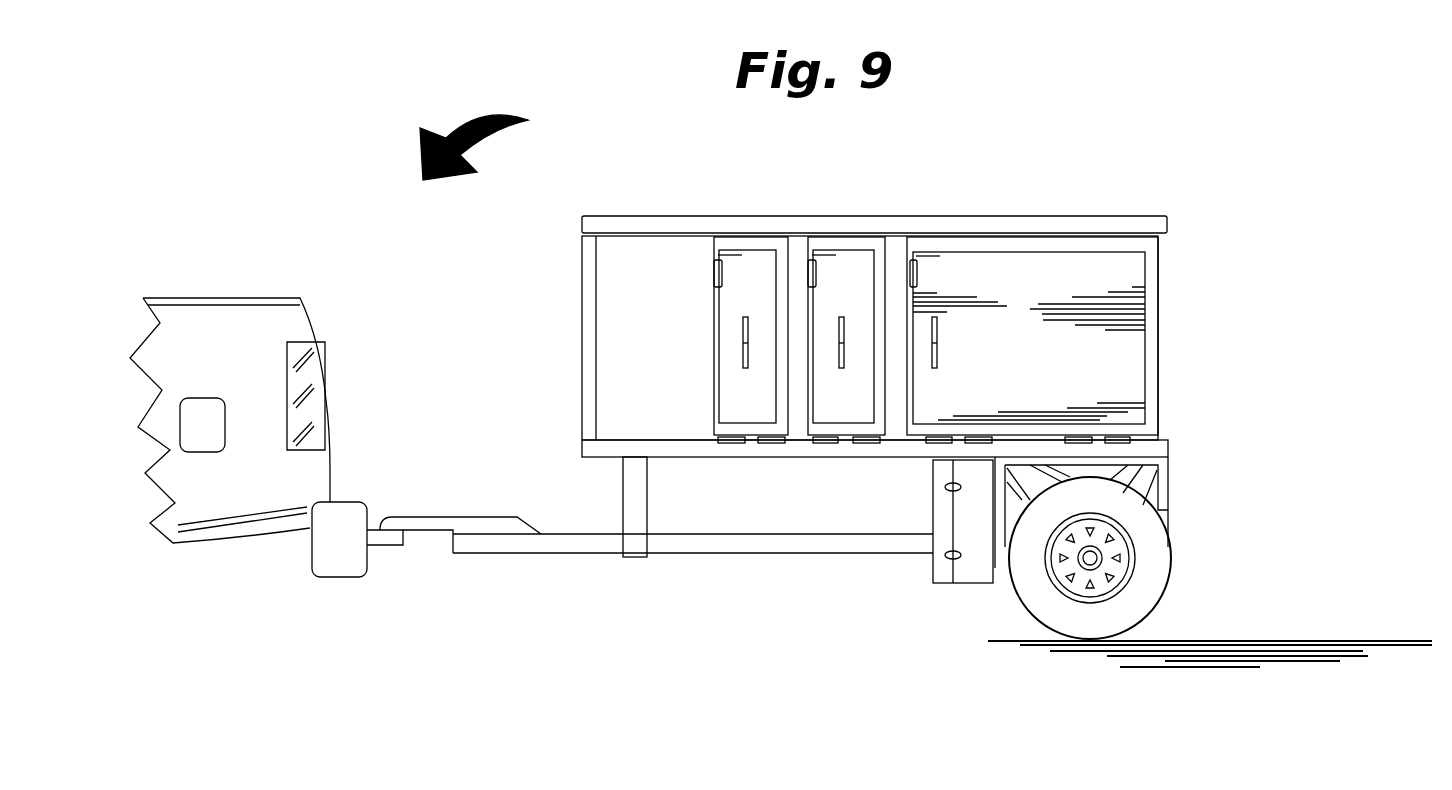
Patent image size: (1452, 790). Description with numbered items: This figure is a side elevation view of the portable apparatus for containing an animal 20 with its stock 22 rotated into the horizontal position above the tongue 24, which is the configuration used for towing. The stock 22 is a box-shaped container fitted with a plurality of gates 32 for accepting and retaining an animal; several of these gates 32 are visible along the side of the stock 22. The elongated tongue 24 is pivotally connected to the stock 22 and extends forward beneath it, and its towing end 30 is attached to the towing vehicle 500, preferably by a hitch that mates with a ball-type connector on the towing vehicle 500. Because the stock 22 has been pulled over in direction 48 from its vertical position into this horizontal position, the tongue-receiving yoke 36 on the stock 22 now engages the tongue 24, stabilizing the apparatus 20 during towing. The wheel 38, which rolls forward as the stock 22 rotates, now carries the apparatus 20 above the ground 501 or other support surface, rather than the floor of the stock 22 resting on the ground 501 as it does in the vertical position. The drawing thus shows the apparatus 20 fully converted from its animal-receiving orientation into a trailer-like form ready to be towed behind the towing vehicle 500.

The portable apparatus for containing an animal 20 is at (1247, 228).
The stock 22 is at (897, 214).
The tongue 24 is at (748, 543).
The towing end 30 is at (376, 522).
The gates 32 is at (1075, 378).
The tongue-receiving yoke 36 is at (632, 560).
The wheel 38 is at (1017, 590).
The direction 48 is at (461, 118).
The towing vehicle 500 is at (372, 348).
The ground 501 is at (1147, 658).